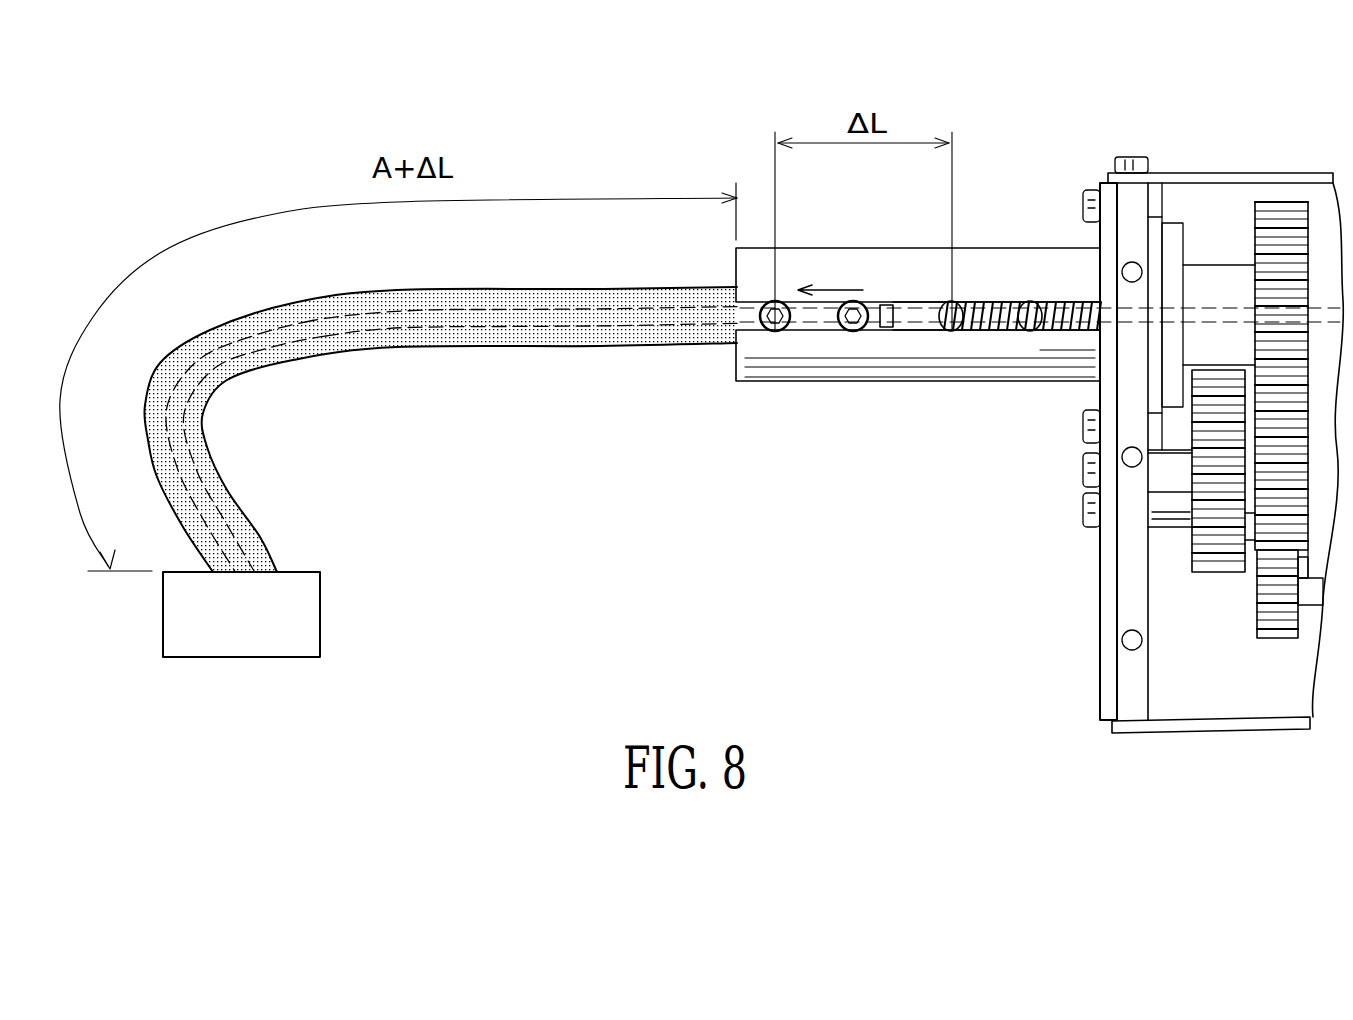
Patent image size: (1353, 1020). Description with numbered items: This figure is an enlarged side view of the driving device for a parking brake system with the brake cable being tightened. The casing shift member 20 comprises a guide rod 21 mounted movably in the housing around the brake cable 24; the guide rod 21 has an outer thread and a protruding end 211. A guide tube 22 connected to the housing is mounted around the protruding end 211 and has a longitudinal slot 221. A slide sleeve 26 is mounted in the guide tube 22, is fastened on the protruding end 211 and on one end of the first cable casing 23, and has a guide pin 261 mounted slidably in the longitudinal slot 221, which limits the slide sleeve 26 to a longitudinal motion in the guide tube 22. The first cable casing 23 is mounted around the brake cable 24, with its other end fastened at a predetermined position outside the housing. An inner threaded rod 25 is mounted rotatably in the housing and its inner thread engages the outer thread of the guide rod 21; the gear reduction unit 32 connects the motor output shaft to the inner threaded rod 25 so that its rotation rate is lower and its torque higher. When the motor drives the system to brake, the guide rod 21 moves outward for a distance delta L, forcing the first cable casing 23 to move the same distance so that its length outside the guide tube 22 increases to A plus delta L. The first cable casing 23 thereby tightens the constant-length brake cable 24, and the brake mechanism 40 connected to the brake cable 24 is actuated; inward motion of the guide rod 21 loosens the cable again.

The casing shift member 20 is at (1031, 426).
The guide rod 21 is at (998, 305).
The protruding end 211 is at (928, 320).
The guide tube 22 is at (795, 268).
The longitudinal slot 221 is at (890, 320).
The first cable casing 23 is at (590, 298).
The brake cable 24 is at (157, 478).
The inner threaded rod 25 is at (1318, 245).
The slide sleeve 26 is at (808, 320).
The guide pin 261 is at (770, 332).
The gear reduction unit 32 is at (1223, 613).
The brake mechanism 40 is at (300, 627).